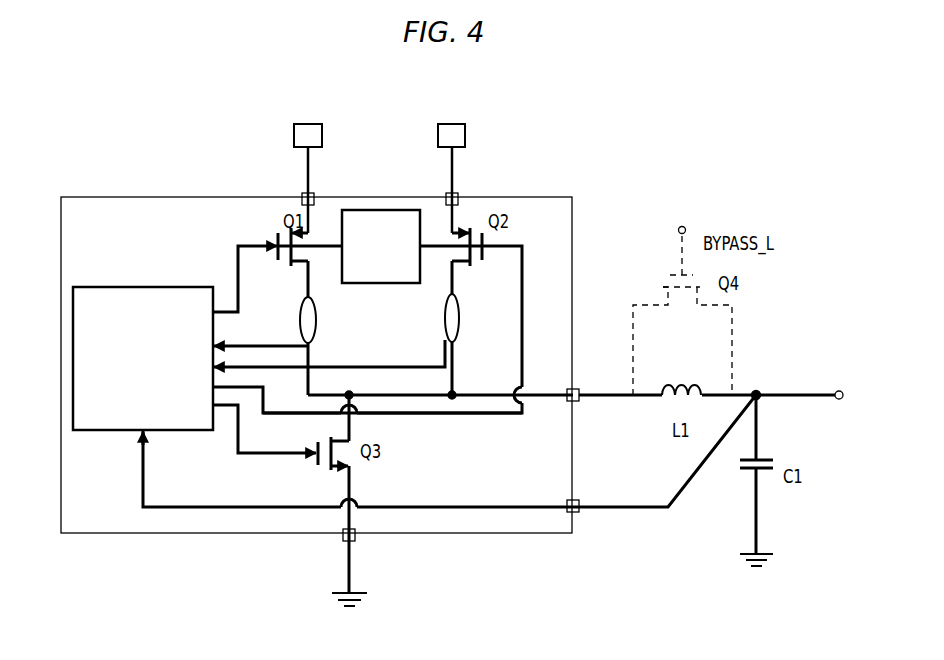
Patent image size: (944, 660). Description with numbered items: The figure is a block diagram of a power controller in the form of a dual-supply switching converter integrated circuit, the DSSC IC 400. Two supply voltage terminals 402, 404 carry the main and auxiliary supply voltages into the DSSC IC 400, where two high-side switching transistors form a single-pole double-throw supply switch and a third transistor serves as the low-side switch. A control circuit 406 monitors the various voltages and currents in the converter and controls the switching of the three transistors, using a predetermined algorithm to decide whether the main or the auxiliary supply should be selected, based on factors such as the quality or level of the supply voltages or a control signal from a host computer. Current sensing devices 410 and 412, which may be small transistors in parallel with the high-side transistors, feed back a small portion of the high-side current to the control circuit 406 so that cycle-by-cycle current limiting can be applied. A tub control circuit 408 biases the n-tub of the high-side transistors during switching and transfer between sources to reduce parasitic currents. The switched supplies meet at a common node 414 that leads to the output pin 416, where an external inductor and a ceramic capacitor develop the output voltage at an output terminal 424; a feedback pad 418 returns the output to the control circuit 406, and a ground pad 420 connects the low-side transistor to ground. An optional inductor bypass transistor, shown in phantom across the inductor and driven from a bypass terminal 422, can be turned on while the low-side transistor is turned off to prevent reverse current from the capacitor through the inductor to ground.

The DSSC IC 400 is at (129, 244).
The first supply voltage terminal Vcc1 402 is at (323, 134).
The second supply voltage terminal Vcc2 404 is at (466, 134).
The control circuit 406 is at (73, 312).
The tub control circuit 408 is at (394, 209).
The current sensing device 410 is at (318, 318).
The current sensing device 412 is at (443, 312).
The common node 414 is at (353, 393).
The output pin 416 is at (578, 401).
The feedback pad 418 is at (578, 512).
The ground pad 420 is at (354, 541).
The bypass control terminal 422 is at (685, 227).
The output voltage terminal Vout 424 is at (842, 399).